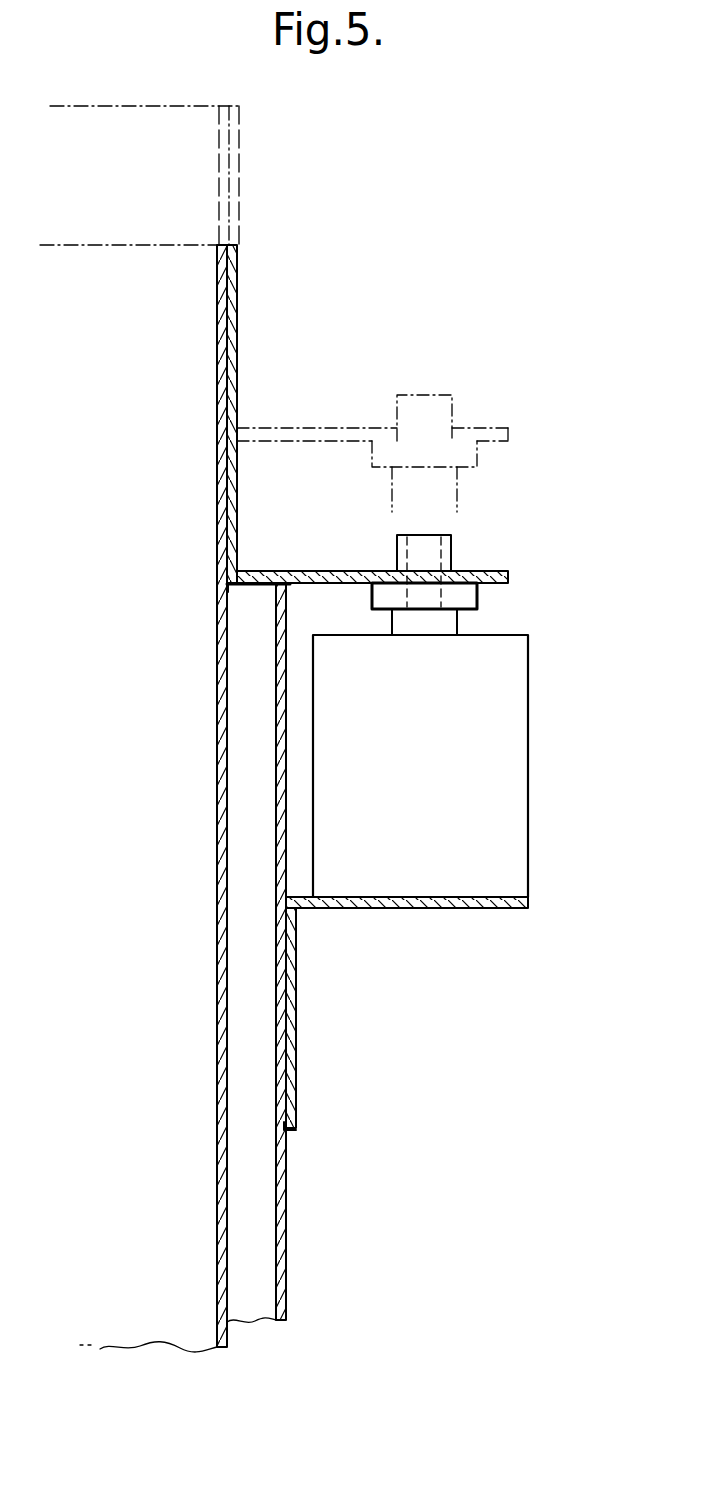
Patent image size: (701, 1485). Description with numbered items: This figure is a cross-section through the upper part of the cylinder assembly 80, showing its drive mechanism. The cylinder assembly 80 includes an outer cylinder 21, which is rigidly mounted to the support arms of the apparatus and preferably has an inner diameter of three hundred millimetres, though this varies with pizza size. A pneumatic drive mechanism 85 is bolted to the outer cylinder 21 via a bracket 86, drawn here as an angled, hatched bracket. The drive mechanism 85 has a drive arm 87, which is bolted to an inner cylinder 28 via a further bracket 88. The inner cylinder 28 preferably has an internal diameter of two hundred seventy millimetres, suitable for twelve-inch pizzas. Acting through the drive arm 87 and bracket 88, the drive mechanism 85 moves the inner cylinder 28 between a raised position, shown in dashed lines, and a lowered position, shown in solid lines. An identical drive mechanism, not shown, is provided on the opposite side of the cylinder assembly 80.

The outer cylinder 21 is at (287, 1280).
The inner cylinder 28 is at (215, 1160).
The cylinder assembly 80 is at (446, 1174).
The pneumatic drive mechanism 85 is at (530, 767).
The bracket 86 is at (297, 1063).
The drive arm 87 is at (458, 624).
The bracket 88 is at (240, 543).